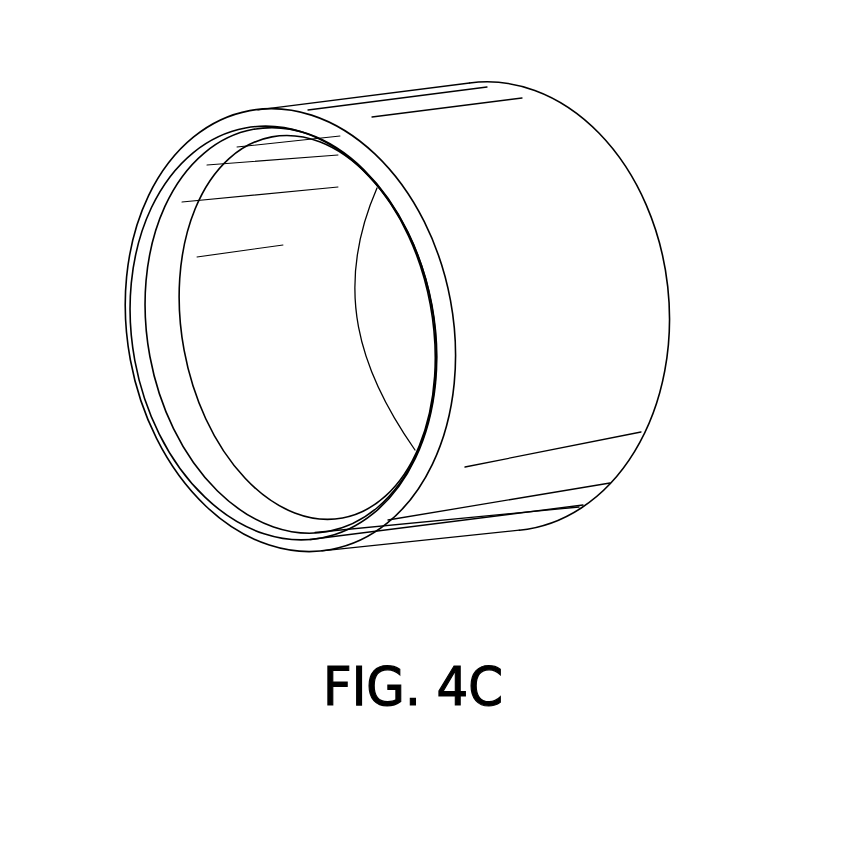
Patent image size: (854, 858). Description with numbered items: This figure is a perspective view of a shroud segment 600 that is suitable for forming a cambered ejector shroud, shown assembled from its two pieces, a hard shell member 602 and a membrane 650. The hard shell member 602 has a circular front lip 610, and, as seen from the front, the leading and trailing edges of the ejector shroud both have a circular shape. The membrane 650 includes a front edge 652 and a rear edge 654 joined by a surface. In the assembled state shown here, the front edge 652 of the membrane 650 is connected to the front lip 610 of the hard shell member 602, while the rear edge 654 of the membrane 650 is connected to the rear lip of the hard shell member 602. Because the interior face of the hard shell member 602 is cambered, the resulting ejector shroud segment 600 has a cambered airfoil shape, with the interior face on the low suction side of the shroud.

The shroud segment 600 is at (203, 100).
The hard shell member 602 is at (200, 293).
The front lip 610 is at (285, 548).
The membrane 650 is at (558, 132).
The front edge 652 is at (325, 125).
The rear edge 654 is at (643, 198).